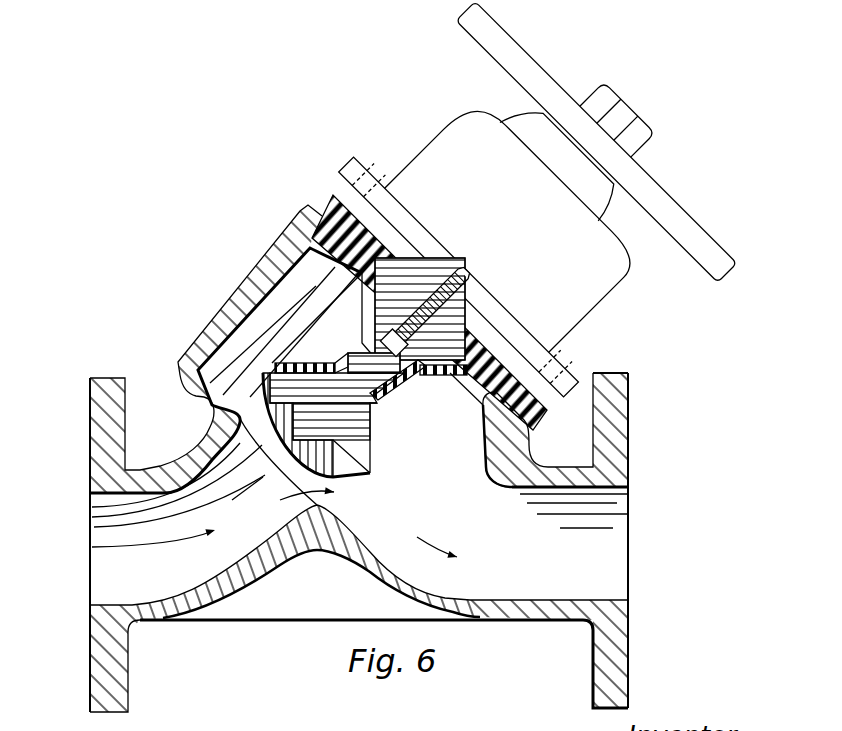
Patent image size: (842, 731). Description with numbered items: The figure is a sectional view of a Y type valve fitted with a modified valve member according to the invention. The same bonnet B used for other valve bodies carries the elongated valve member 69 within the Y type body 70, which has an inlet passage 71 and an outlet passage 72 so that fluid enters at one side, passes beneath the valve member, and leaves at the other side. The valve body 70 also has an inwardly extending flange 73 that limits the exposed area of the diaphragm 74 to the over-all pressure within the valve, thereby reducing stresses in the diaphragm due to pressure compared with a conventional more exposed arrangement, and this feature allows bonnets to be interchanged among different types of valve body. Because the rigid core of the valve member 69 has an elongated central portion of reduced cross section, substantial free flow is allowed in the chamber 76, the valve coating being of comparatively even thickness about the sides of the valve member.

The elongated valve member 69 is at (401, 402).
The Y type body 70 is at (187, 331).
The inlet passage 71 is at (137, 588).
The outlet passage 72 is at (612, 558).
The inwardly extending flange 73 is at (340, 262).
The diaphragm 74 is at (310, 199).
The chamber 76 is at (268, 330).
The bonnet B is at (604, 299).